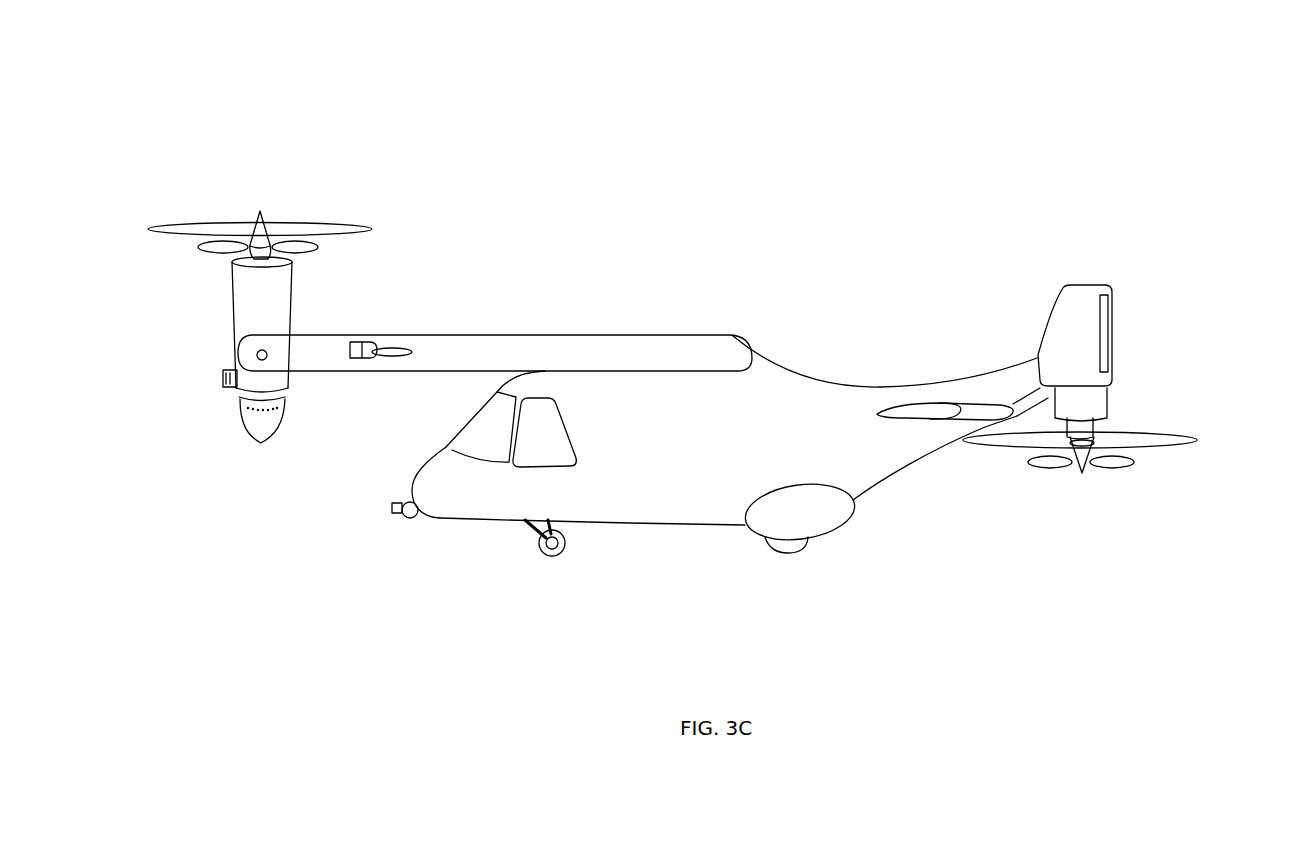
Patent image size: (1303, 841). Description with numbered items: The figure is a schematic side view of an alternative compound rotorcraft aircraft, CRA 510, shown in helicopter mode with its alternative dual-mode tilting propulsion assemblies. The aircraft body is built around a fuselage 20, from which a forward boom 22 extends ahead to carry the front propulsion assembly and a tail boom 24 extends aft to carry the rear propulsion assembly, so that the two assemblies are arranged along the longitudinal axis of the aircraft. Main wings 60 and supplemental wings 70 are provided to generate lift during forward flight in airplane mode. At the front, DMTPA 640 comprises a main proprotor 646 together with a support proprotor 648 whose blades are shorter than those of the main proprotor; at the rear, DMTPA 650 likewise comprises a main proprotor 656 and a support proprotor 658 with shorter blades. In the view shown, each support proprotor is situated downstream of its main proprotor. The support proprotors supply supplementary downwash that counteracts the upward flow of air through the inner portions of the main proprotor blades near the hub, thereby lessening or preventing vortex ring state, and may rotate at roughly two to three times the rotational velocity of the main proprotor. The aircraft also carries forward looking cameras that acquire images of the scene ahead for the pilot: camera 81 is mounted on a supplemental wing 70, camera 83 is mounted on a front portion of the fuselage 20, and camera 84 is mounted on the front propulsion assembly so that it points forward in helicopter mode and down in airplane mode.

The CRA 510 is at (238, 97).
The fuselage 20 is at (785, 360).
The forward boom 22 is at (440, 372).
The tail boom 24 is at (967, 378).
The main wings 60 is at (932, 422).
The supplemental wings 70 is at (364, 366).
The camera 81 is at (370, 341).
The camera 83 is at (408, 518).
The camera 84 is at (222, 376).
The DMTPA 640 is at (220, 408).
The main proprotor 646 is at (180, 222).
The support proprotor 648 is at (223, 255).
The DMTPA 650 is at (1118, 397).
The main proprotor 656 is at (1190, 444).
The support proprotor 658 is at (1105, 470).